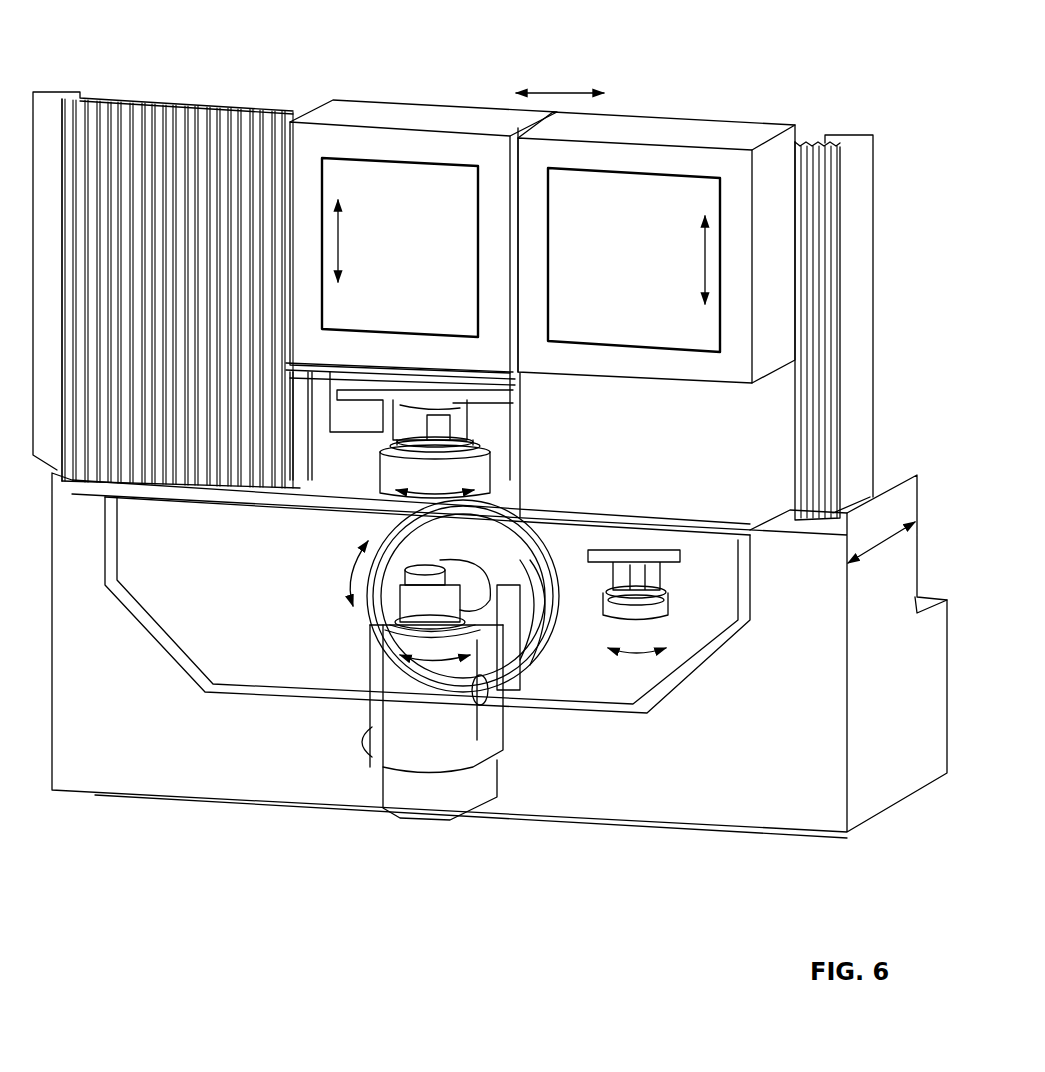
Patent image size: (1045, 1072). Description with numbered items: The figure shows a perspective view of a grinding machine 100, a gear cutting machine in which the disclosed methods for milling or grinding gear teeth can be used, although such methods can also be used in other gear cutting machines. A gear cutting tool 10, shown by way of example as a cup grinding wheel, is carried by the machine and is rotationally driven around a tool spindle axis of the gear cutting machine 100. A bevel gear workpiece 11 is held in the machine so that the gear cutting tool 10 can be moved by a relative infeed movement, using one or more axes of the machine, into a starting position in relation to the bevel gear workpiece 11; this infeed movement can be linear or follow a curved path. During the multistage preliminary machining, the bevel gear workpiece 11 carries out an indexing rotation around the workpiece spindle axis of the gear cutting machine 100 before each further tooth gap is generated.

The gear cutting machine 100 is at (490, 430).
The gear cutting tool 10 is at (380, 487).
The bevel gear workpiece 11 is at (400, 572).